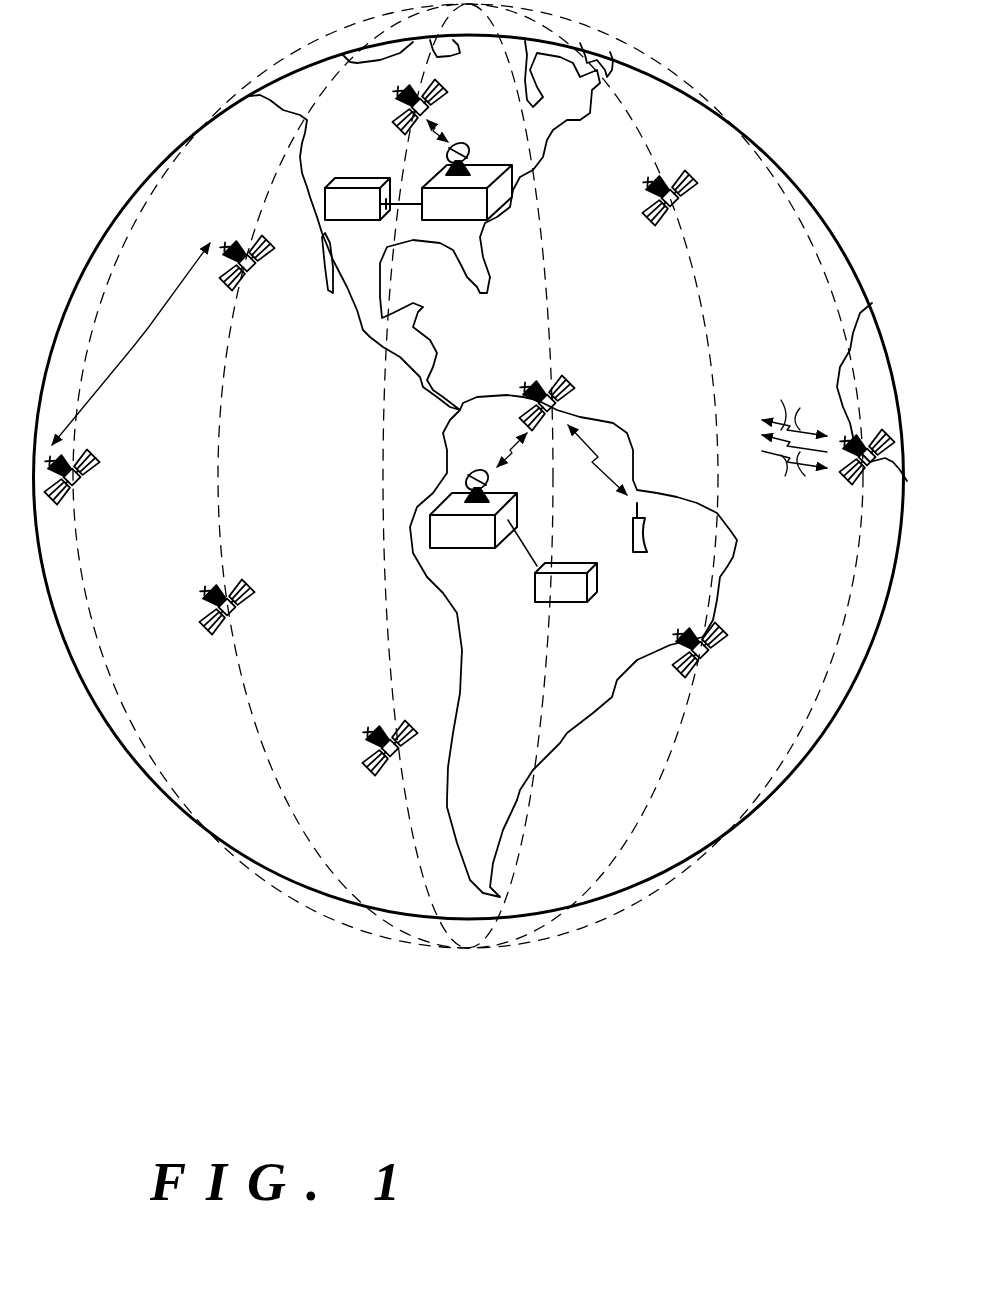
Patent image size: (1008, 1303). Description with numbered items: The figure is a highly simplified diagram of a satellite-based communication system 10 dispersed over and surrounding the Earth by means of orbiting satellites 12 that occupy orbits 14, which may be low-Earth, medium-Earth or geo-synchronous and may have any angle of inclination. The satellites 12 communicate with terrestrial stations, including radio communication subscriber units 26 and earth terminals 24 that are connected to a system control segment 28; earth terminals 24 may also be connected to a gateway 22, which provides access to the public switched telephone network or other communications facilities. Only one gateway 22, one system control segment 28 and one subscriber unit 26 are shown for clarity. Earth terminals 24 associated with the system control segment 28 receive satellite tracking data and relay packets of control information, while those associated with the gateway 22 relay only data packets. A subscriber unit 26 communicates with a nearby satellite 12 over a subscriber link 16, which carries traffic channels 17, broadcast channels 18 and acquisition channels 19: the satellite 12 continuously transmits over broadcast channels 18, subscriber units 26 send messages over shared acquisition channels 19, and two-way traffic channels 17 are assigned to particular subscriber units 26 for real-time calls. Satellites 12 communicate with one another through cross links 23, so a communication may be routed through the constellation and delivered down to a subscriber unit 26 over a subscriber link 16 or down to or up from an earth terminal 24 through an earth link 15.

The satellite-based communication system 10 is at (460, 1050).
The satellite 12 is at (405, 130).
The orbit 14 is at (279, 176).
The earth link 15 is at (506, 447).
The subscriber link 16 is at (597, 440).
The traffic channel 17 is at (783, 410).
The broadcast channel 18 is at (766, 432).
The acquisition channel 19 is at (783, 468).
The gateway 22 is at (565, 603).
The cross link 23 is at (152, 330).
The earth terminal 24 is at (490, 162).
The subscriber unit 26 is at (645, 553).
The system control segment 28 is at (340, 221).